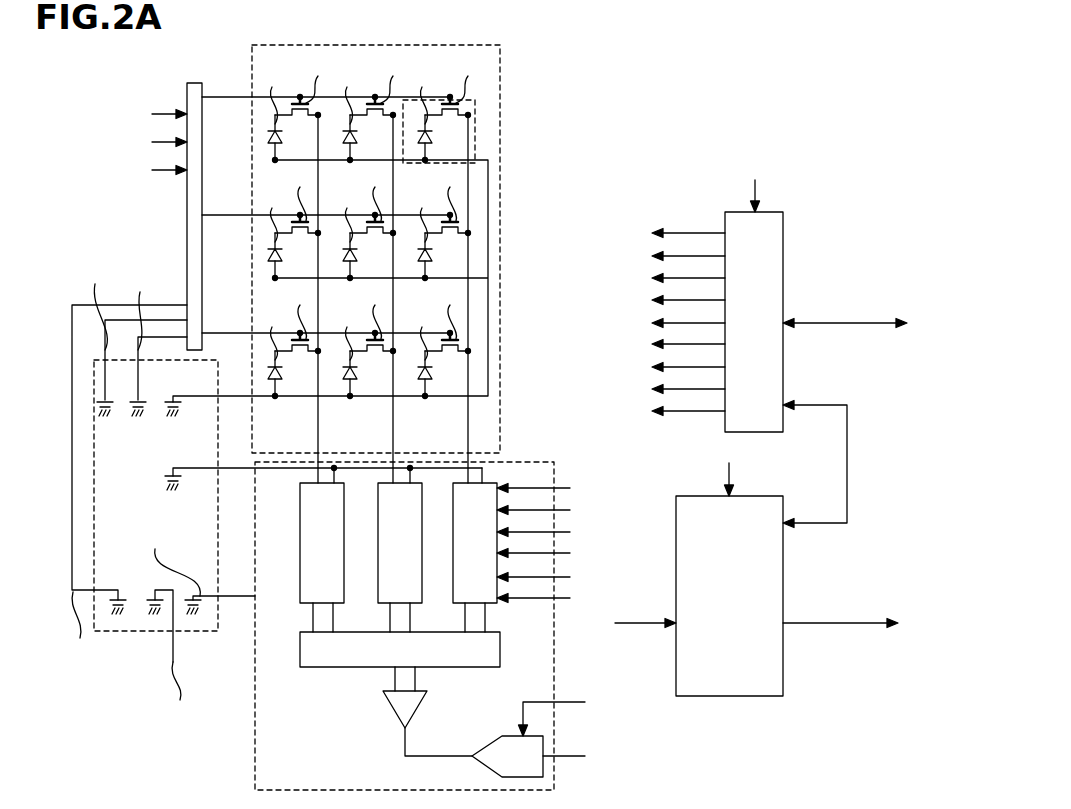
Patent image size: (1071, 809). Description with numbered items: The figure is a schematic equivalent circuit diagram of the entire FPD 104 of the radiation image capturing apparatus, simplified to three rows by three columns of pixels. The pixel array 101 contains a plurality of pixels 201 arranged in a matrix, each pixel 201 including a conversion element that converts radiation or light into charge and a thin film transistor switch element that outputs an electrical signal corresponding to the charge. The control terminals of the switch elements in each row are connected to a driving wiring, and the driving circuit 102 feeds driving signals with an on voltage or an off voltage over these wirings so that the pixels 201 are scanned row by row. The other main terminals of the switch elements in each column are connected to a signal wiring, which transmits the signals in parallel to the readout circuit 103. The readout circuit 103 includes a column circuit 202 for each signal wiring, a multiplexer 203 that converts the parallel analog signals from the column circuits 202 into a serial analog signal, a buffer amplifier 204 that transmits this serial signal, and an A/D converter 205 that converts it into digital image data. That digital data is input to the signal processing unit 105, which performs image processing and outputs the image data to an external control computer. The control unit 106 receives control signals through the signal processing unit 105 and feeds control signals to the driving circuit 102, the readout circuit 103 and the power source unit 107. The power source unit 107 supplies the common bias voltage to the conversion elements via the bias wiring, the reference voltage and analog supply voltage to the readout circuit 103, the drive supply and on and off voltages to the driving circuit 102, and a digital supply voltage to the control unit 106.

The pixel array 101 is at (503, 62).
The driving circuit 102 is at (186, 225).
The readout circuit 103 is at (255, 766).
The FPD 104 is at (128, 72).
The signal processing unit 105 is at (783, 579).
The control unit 106 is at (783, 233).
The power source unit 107 is at (205, 631).
The pixel 201 is at (475, 133).
The column circuit 202 is at (300, 552).
The multiplexer 203 is at (470, 667).
The buffer amplifier 204 is at (395, 712).
The A/D converter 205 is at (495, 775).